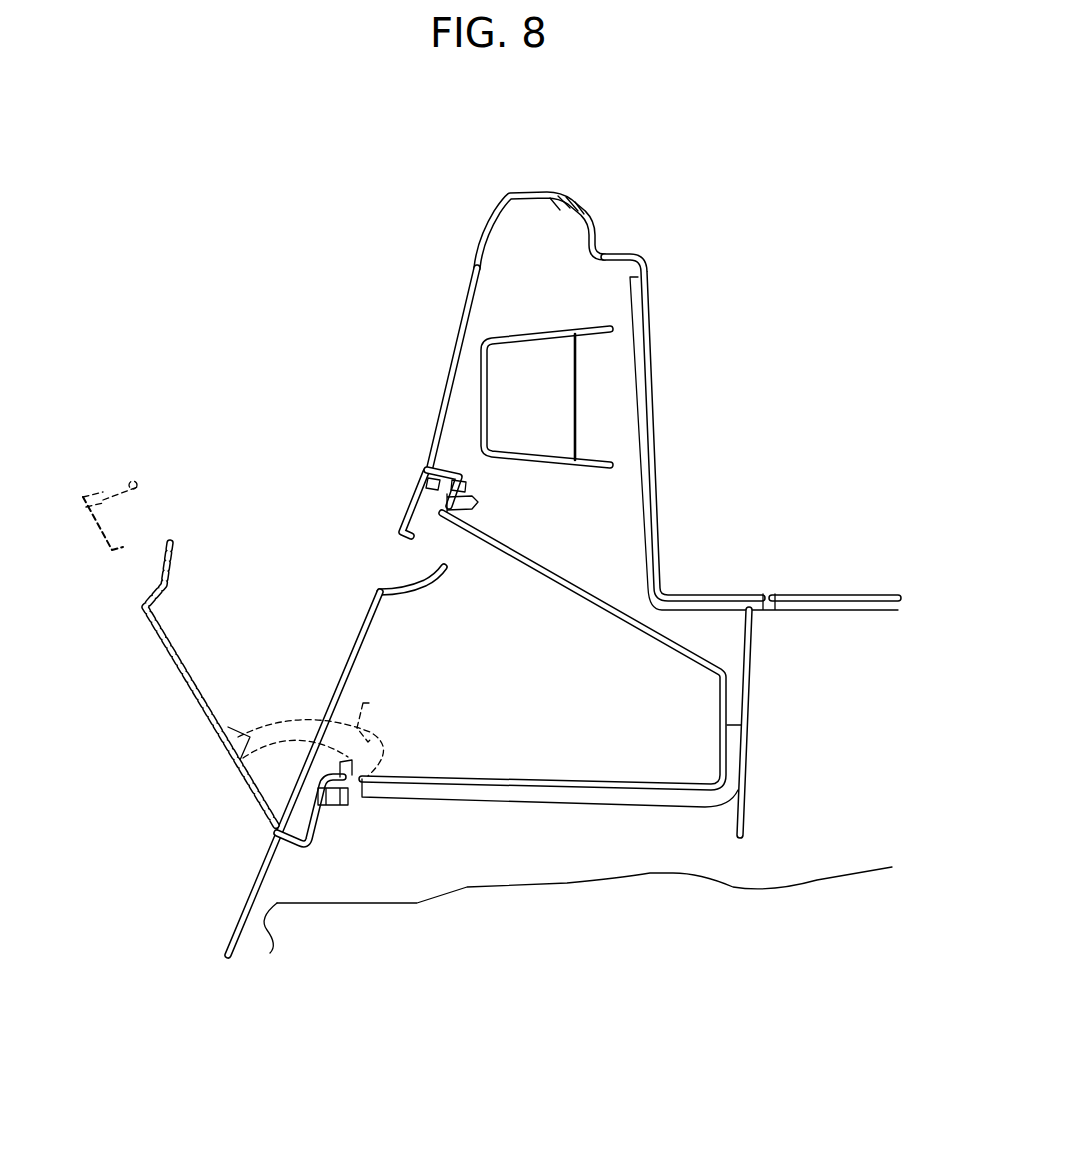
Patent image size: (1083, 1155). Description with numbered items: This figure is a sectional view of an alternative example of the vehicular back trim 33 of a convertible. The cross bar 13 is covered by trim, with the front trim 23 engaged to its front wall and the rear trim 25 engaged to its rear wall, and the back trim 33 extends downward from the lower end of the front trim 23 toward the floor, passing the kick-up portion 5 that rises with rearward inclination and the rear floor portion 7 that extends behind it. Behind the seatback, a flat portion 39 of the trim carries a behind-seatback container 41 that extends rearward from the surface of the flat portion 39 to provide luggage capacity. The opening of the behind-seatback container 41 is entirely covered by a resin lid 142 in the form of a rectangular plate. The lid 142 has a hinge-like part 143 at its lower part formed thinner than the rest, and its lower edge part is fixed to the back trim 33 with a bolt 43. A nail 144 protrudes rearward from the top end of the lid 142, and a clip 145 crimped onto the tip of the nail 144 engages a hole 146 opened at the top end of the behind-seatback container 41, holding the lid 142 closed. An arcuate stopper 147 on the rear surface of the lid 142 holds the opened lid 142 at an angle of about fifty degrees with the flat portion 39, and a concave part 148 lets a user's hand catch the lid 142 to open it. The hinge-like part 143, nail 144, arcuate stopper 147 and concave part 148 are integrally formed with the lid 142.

The kick-up portion 5 is at (270, 955).
The rear floor portion 7 is at (830, 878).
The cross bar 13 is at (527, 337).
The front trim 23 is at (474, 331).
The rear trim 25 is at (650, 345).
The vehicular back trim 33 is at (244, 897).
The flat portion 39 is at (437, 420).
The behind-seatback container 41 is at (587, 580).
The bolt 43 is at (345, 800).
The lid 142 is at (420, 494).
The hinge-like part 143 is at (277, 832).
The nail 144 is at (430, 508).
The clip 145 is at (475, 506).
The hole 146 is at (468, 484).
The arcuate stopper 147 is at (291, 718).
The concave part 148 is at (385, 570).